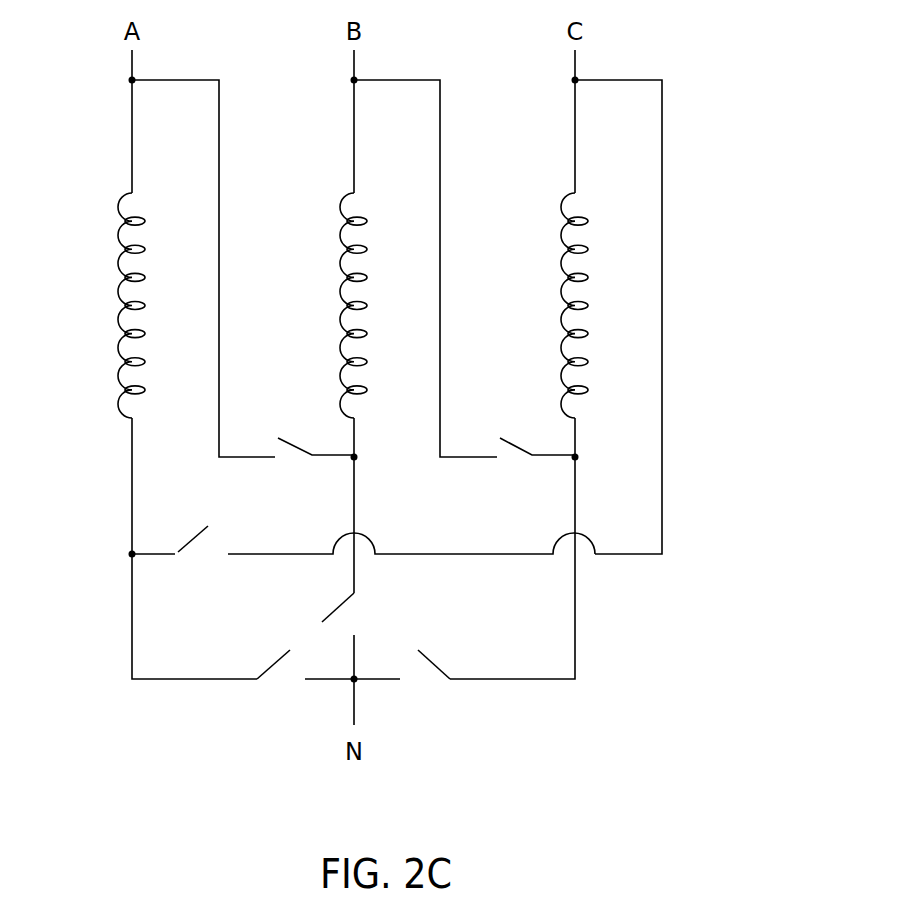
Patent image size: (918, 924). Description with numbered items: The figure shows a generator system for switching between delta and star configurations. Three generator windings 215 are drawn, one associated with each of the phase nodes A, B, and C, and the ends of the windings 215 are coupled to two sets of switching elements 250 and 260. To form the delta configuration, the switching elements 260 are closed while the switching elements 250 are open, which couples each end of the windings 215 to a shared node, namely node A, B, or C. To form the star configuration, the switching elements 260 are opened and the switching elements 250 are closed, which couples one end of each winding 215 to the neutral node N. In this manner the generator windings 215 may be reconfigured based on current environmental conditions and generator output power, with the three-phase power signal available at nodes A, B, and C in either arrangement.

The winding 215 is at (118, 318).
The switching element 260 is at (293, 462).
The switching element 250 is at (388, 615).